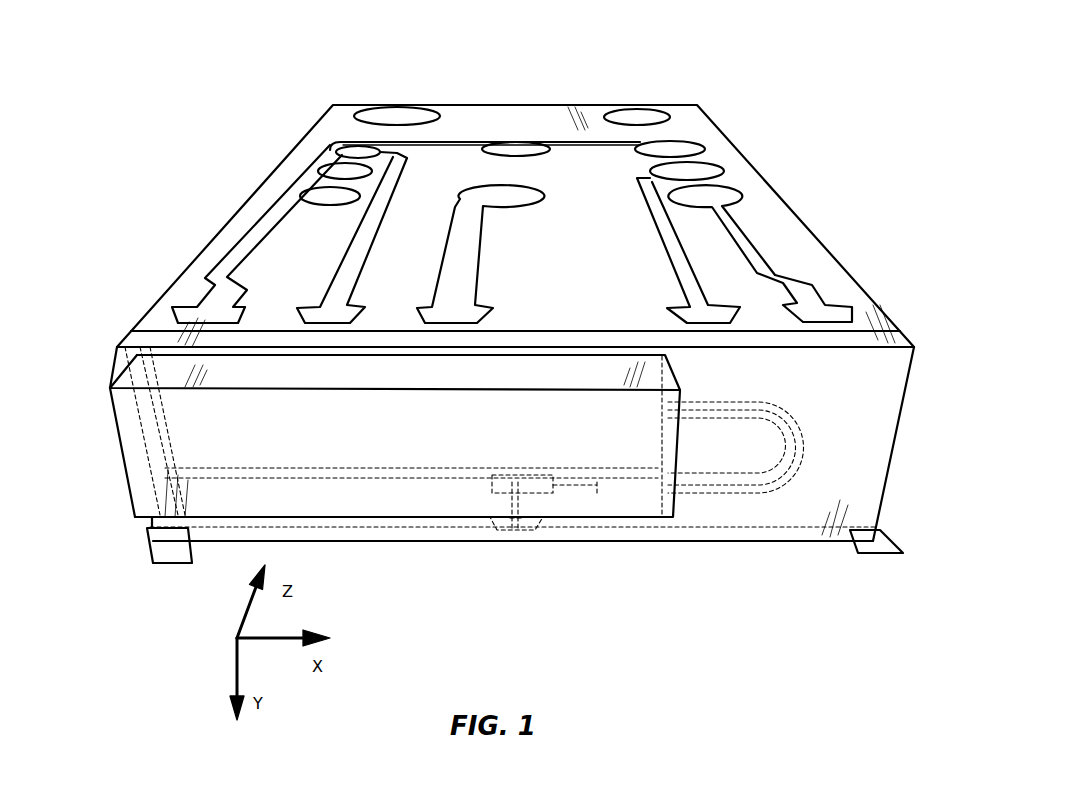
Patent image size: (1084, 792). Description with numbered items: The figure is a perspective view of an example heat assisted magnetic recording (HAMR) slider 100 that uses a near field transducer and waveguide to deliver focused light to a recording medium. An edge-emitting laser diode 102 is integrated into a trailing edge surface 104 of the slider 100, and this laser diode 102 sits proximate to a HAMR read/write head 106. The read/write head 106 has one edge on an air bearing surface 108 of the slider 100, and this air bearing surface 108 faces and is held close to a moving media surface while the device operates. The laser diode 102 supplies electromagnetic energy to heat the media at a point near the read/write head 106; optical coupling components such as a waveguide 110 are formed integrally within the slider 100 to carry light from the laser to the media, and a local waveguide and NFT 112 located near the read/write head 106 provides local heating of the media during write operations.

The HAMR slider 100 is at (707, 50).
The edge-emitting laser diode 102 is at (128, 492).
The trailing edge surface 104 is at (177, 565).
The HAMR read/write head 106 is at (526, 525).
The air bearing surface 108 is at (888, 556).
The waveguide 110 is at (743, 490).
The local waveguide and NFT 112 is at (512, 527).